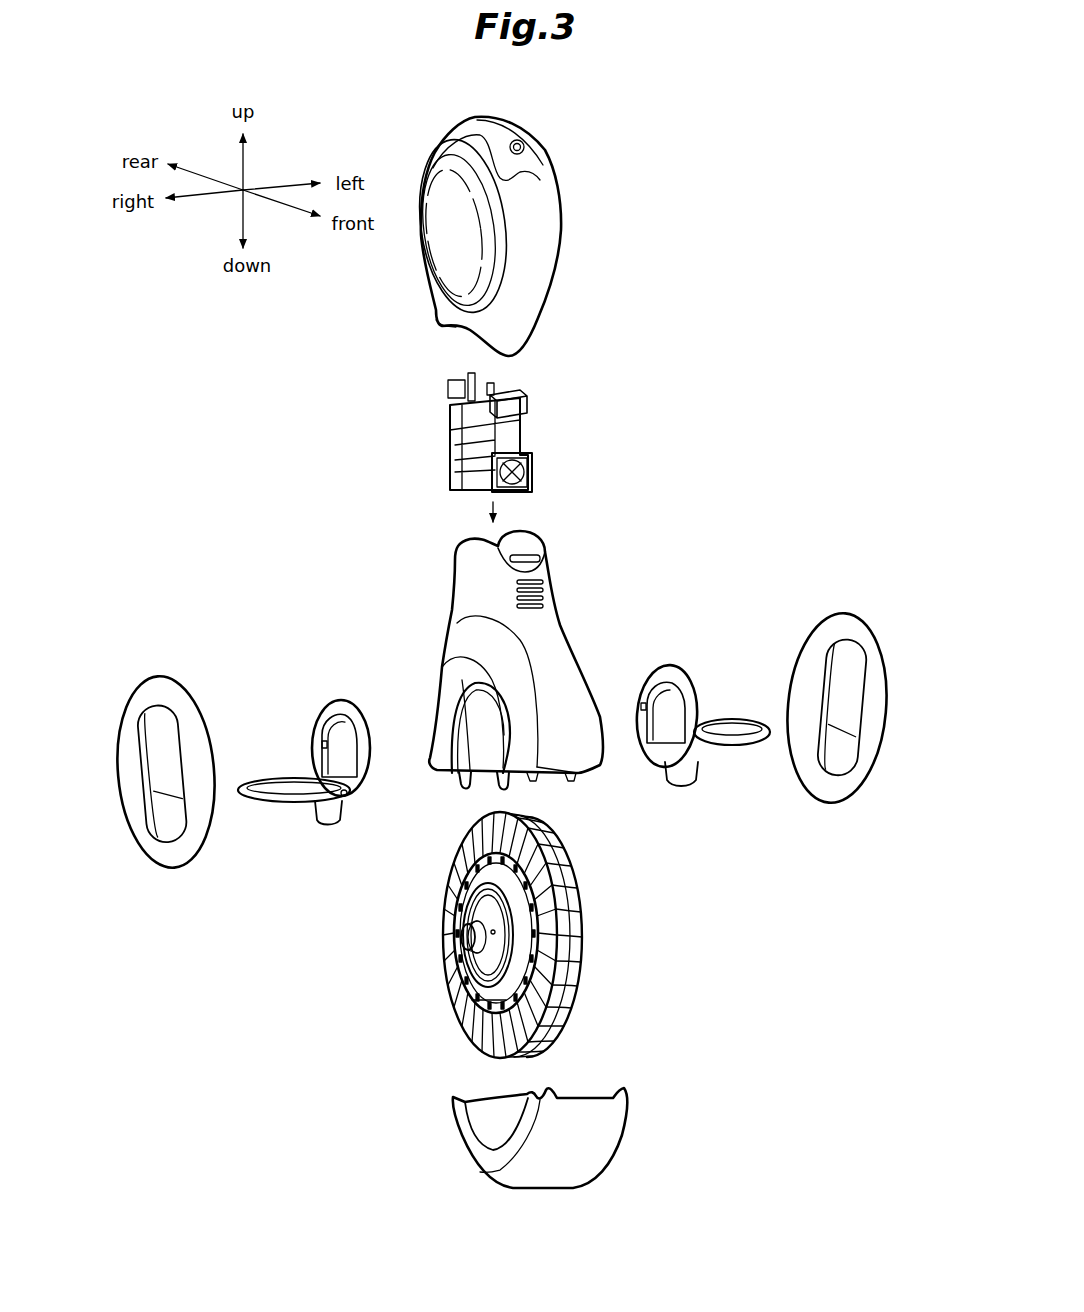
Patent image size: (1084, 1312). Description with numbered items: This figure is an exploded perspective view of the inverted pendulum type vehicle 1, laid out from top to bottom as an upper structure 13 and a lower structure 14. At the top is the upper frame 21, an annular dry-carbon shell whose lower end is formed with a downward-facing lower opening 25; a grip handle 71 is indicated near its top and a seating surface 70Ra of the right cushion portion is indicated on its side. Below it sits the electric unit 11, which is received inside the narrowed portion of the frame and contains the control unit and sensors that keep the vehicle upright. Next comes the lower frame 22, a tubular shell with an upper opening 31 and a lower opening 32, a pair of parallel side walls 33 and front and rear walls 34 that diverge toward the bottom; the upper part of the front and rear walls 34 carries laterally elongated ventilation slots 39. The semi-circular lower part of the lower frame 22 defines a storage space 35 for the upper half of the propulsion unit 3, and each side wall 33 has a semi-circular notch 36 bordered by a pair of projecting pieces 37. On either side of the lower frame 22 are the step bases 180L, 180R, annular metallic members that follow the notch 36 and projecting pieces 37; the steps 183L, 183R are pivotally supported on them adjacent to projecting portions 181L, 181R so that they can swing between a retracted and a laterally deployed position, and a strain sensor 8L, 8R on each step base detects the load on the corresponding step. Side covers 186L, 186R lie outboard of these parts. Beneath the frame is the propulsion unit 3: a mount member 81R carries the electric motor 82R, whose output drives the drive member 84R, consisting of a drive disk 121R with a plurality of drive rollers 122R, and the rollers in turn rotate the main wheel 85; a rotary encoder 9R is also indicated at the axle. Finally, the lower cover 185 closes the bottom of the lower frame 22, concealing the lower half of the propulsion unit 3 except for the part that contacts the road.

The inverted pendulum type vehicle 1 is at (697, 206).
The propulsion unit 3 is at (460, 1050).
The strain sensor 8R is at (322, 740).
The strain sensor 8L is at (640, 708).
The rotary encoder 9R is at (452, 930).
The electric unit 11 is at (556, 413).
The upper structure 13 is at (578, 172).
The lower structure 14 is at (655, 536).
The upper frame 21 is at (553, 250).
The lower frame 22 is at (518, 666).
The lower opening 25 is at (442, 328).
The upper opening 31 is at (478, 538).
The lower opening 32 is at (580, 778).
The side wall 33 is at (462, 598).
The front and rear wall 34 is at (570, 654).
The storage space 35 is at (478, 745).
The semi-circular notch 36 is at (462, 732).
The projecting piece 37 is at (466, 782).
The ventilation slot 39 is at (555, 603).
The seating surface 70Ra is at (426, 196).
The grip handle 71 is at (494, 126).
The mount member 81R is at (556, 1030).
The electric motor 82R is at (565, 964).
The drive member 84R is at (560, 862).
The main wheel 85 is at (452, 847).
The drive disk 121R is at (456, 995).
The drive roller 122R is at (580, 918).
The step base 180R is at (338, 703).
The step base 180L is at (662, 665).
The projecting portion 181R is at (318, 815).
The projecting portion 181L is at (692, 782).
The step 183R is at (250, 783).
The step 183L is at (732, 722).
The lower cover 185 is at (605, 1145).
The side cover 186R is at (162, 686).
The side cover 186L is at (825, 620).